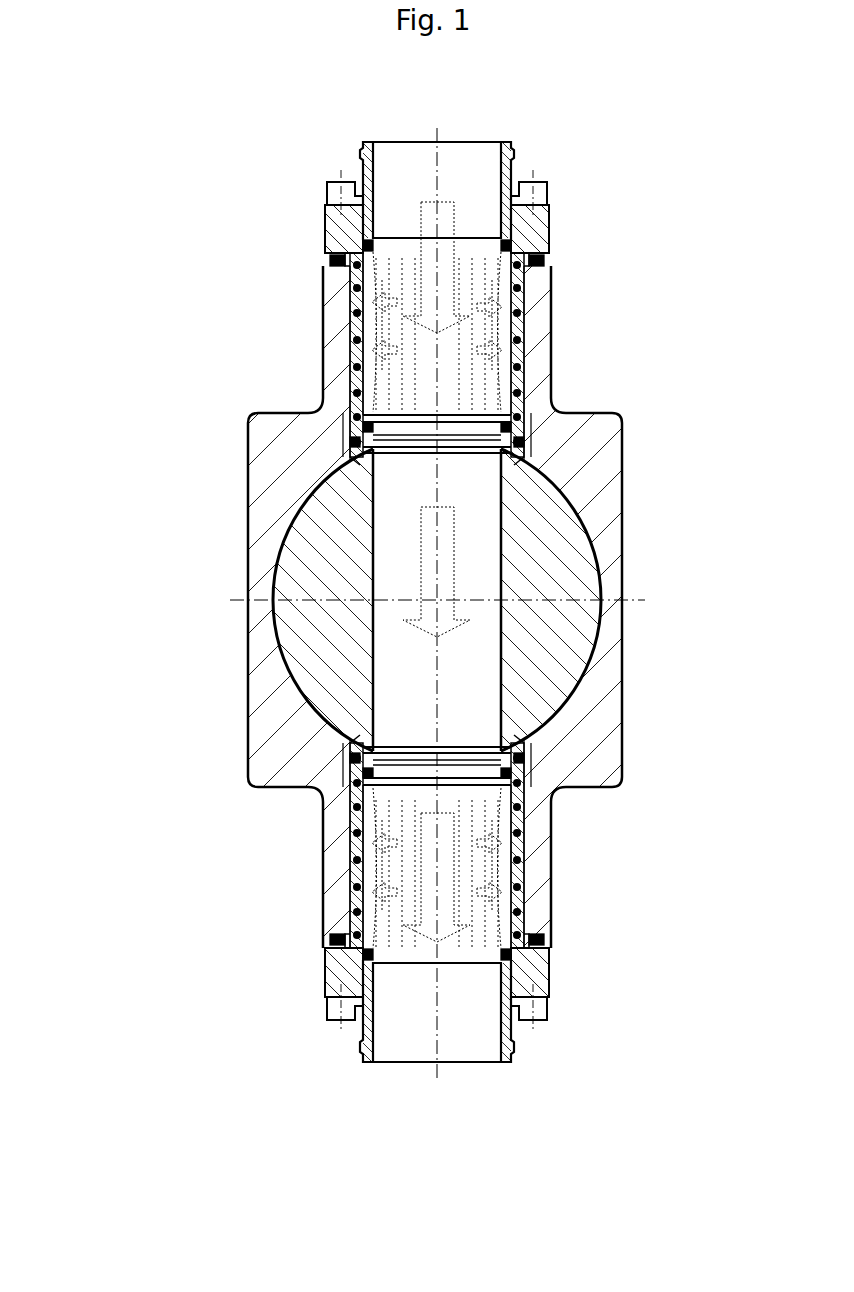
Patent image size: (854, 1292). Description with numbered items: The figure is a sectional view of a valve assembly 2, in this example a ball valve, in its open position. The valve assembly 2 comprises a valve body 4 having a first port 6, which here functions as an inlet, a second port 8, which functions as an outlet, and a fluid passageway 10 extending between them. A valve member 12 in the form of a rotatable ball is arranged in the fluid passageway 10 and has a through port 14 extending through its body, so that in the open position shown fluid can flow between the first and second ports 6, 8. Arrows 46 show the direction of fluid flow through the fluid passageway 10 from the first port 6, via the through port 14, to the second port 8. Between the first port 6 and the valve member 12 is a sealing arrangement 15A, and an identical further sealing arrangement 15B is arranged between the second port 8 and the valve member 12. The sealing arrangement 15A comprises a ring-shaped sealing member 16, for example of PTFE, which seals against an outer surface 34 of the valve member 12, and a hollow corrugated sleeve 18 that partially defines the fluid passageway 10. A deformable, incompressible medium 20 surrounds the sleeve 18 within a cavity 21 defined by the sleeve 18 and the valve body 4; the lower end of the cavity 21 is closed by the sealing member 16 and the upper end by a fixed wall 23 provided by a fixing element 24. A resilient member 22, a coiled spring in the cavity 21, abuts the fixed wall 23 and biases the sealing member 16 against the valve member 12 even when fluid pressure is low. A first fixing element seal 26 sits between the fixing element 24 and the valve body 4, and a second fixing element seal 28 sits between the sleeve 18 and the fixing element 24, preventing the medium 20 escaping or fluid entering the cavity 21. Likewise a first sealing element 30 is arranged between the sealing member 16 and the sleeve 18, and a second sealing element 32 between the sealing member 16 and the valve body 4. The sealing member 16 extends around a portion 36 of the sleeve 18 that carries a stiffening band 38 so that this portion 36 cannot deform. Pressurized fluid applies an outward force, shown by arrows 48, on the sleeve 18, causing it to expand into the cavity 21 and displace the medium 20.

The valve assembly 2 is at (152, 230).
The valve body 4 is at (268, 680).
The first port 6 is at (495, 140).
The second port 8 is at (367, 1063).
The fluid passageway 10 is at (460, 295).
The valve member 12 is at (572, 540).
The through port 14 is at (482, 620).
The sealing arrangement 15A is at (332, 375).
The further sealing arrangement 15B is at (325, 787).
The sealing member 16 is at (355, 413).
The sleeve 18 is at (523, 328).
The deformable, incompressible medium 20 is at (355, 322).
The cavity 21 is at (355, 288).
The resilient member 22 is at (352, 260).
The fixed wall 23 is at (352, 245).
The fixing element 24 is at (548, 245).
The first fixing element seal 26 is at (548, 262).
The second fixing element seal 28 is at (508, 243).
The first sealing element 30 is at (355, 430).
The second sealing element 32 is at (355, 447).
The outer surface 34 is at (352, 462).
The portion of the sleeve 36 is at (512, 426).
The stiffening band 38 is at (522, 440).
The arrows 46 is at (430, 215).
The arrows 48 is at (385, 290).